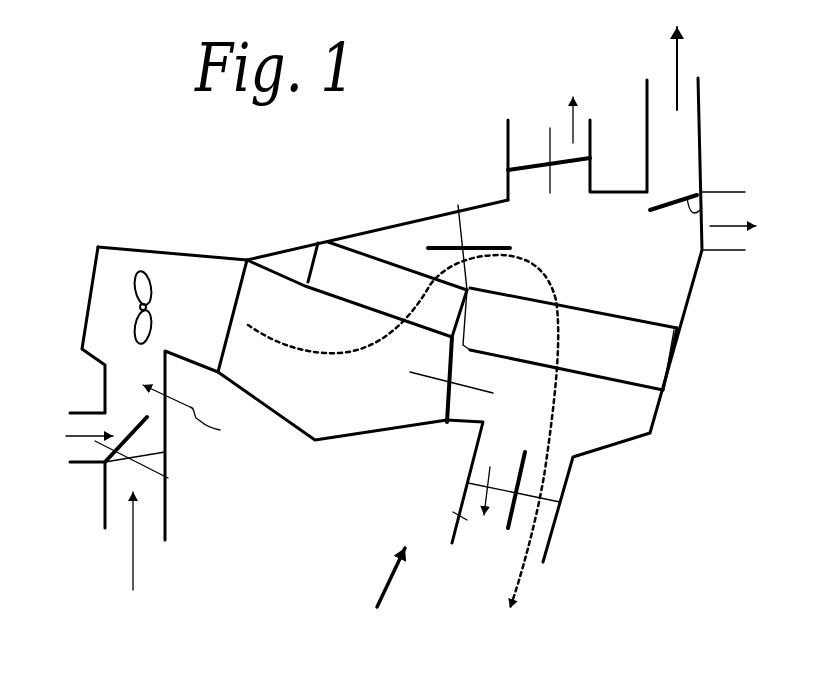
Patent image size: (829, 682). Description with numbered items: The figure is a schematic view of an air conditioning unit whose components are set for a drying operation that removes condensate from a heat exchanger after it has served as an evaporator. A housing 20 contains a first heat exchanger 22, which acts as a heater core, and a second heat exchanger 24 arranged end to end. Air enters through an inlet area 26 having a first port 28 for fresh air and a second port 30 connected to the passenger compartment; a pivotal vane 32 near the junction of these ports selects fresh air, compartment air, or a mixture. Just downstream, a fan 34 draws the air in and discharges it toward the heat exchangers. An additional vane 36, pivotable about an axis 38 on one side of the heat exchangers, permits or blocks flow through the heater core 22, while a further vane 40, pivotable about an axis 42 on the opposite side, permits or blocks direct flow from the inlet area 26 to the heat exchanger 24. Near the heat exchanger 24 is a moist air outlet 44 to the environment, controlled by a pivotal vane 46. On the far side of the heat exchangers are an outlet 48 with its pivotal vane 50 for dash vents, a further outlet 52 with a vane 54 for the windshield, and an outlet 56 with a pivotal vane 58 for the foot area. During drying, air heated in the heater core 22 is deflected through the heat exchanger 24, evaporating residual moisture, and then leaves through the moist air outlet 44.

The housing 20 is at (383, 227).
The first heat exchanger 22 is at (357, 289).
The second heat exchanger 24 is at (573, 339).
The inlet area 26 is at (195, 419).
The first port 28 is at (88, 462).
The second port 30 is at (165, 528).
The pivotal vane 32 is at (170, 478).
The fan 34 is at (140, 272).
The additional vane 36 is at (490, 247).
The axis 38 is at (462, 247).
The further vane 40 is at (450, 385).
The axis 42 is at (452, 383).
The moist air outlet 44 is at (466, 537).
The pivotal vane 46 is at (510, 528).
The outlet 48 is at (523, 143).
The pivotal vane 50 is at (537, 160).
The further outlet 52 is at (647, 80).
The vane 54 is at (668, 203).
The outlet 56 is at (720, 253).
The pivotal vane 58 is at (690, 193).